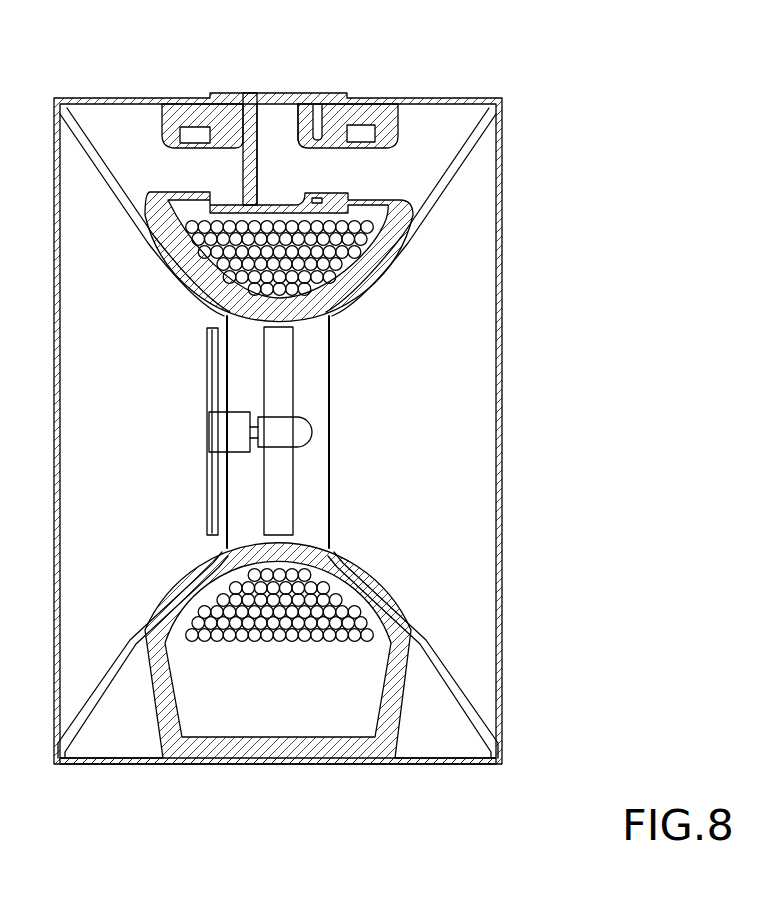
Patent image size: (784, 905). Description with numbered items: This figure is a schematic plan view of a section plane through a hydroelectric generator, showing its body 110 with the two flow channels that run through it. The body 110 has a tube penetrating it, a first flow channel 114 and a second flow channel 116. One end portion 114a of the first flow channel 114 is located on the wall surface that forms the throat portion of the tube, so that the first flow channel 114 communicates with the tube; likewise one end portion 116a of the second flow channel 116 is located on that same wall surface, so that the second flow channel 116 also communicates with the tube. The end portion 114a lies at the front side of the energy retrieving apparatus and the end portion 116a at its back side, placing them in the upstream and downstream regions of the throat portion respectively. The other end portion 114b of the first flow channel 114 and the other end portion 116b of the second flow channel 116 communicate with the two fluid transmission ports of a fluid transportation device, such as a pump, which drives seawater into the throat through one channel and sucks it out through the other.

The body 110 is at (383, 110).
The first flow channel 114 is at (113, 113).
The end portion of the first flow channel 114a is at (240, 322).
The other end portion of the first flow channel 114b is at (240, 88).
The second flow channel 116 is at (455, 127).
The end portion of the second flow channel 116a is at (318, 322).
The other end portion of the second flow channel 116b is at (273, 100).